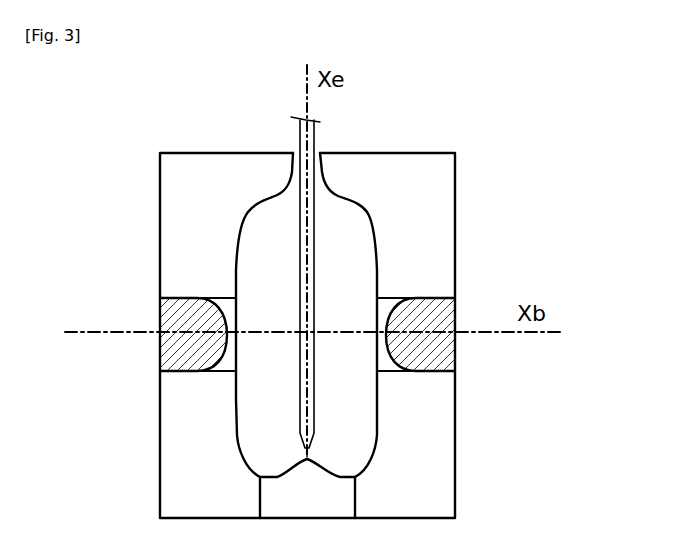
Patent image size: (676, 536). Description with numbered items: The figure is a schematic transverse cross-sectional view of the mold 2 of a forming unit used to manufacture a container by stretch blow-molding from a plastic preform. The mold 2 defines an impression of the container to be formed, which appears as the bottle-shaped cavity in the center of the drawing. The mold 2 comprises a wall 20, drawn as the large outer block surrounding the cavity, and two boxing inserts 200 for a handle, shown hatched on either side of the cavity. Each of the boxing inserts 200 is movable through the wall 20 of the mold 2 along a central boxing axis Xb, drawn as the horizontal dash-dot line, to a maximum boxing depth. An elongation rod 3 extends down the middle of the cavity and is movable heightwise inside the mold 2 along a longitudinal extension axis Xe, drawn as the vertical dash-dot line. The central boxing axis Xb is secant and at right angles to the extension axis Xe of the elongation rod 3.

The mold 2 is at (468, 185).
The wall 20 is at (184, 438).
The boxing inserts 200 is at (170, 354).
The elongation rod 3 is at (313, 241).